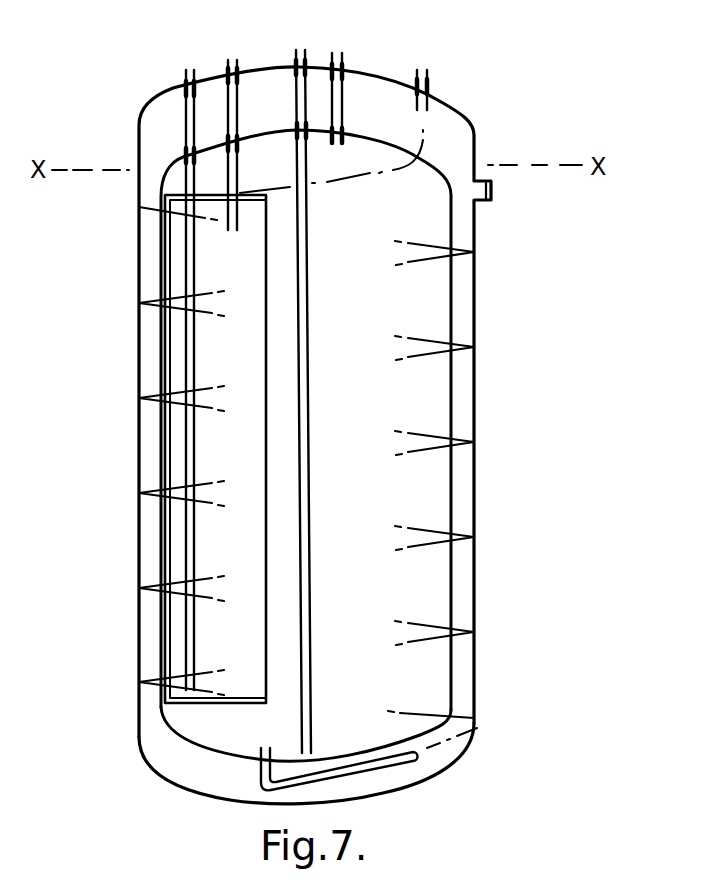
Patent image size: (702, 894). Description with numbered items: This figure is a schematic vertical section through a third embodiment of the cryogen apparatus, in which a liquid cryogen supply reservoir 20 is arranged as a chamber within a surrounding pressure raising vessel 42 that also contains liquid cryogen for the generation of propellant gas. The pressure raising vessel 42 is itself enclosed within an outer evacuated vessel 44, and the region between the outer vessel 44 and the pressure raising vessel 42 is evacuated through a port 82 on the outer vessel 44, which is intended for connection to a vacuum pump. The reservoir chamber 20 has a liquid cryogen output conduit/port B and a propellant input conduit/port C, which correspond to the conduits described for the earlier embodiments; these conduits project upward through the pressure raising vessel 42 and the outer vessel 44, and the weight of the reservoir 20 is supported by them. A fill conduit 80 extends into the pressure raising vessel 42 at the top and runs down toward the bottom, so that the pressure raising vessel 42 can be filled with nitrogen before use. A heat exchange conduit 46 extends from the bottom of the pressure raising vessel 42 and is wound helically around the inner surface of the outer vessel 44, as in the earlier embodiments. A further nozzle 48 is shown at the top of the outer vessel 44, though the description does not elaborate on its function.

The liquid cryogen output conduit/port B is at (186, 70).
The propellant input conduit/port C is at (232, 60).
The fill conduit 80 is at (300, 50).
The nozzle 48 is at (437, 103).
The port 82 is at (494, 197).
The liquid cryogen supply reservoir 20 is at (217, 340).
The outer evacuated vessel 44 is at (475, 556).
The pressure raising vessel 42 is at (453, 598).
The heat exchange conduit 46 is at (353, 767).